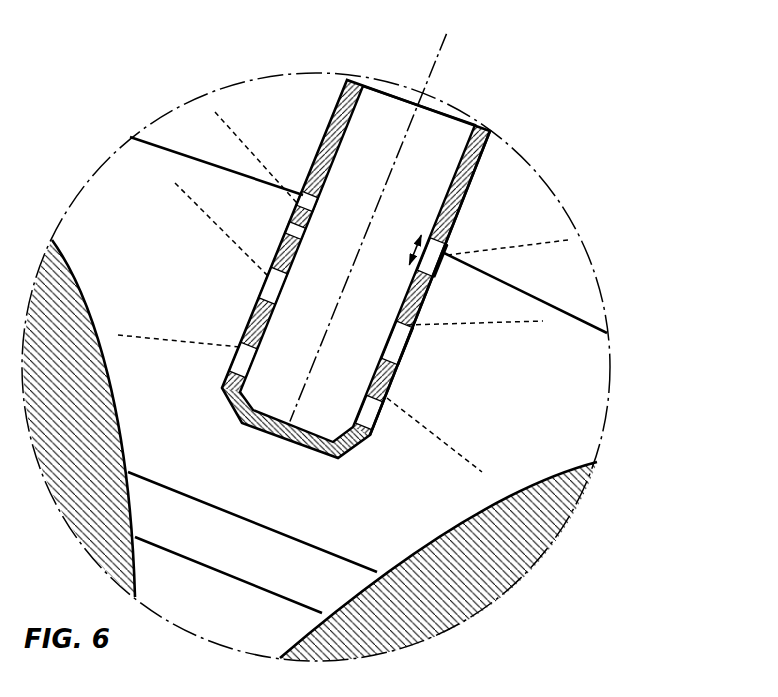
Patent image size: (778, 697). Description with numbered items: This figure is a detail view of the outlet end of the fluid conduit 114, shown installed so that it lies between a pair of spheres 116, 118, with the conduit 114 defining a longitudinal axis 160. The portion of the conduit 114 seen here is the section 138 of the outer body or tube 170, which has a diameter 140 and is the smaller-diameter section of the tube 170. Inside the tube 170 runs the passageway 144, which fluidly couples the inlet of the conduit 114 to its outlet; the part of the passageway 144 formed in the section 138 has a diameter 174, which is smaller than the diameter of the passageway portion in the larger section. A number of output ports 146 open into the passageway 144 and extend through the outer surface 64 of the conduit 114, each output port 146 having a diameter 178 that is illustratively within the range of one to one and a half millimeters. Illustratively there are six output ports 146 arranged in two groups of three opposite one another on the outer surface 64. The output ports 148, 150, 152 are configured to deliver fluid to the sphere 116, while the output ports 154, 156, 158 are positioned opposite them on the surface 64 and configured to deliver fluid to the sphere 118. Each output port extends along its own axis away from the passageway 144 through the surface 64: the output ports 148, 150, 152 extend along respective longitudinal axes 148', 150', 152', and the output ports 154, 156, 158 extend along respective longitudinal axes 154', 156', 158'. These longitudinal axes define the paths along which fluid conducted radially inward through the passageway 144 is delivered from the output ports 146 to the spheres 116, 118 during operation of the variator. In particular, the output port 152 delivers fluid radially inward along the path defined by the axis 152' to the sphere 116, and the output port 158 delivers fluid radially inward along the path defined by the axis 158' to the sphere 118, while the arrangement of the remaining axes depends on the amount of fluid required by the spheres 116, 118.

The outer surface 64 is at (463, 197).
The conduit 114 is at (390, 80).
The sphere 116 is at (63, 463).
The sphere 118 is at (428, 593).
The section 138 is at (487, 147).
The diameter 140 is at (317, 154).
The passageway 144 is at (442, 122).
The output ports 146 is at (277, 100).
The output port 148 is at (292, 171).
The longitudinal axis 148' is at (213, 131).
The output port 150 is at (262, 254).
The longitudinal axis 150' is at (191, 215).
The output port 152 is at (198, 328).
The longitudinal axis 152' is at (179, 377).
The output port 154 is at (527, 239).
The longitudinal axis 154' is at (552, 273).
The output port 156 is at (474, 368).
The longitudinal axis 156' is at (505, 348).
The output port 158 is at (385, 446).
The longitudinal axis 158' is at (466, 435).
The longitudinal axis 160 is at (438, 62).
The tube 170 is at (447, 238).
The diameter 174 is at (353, 110).
The diameter 178 is at (412, 251).